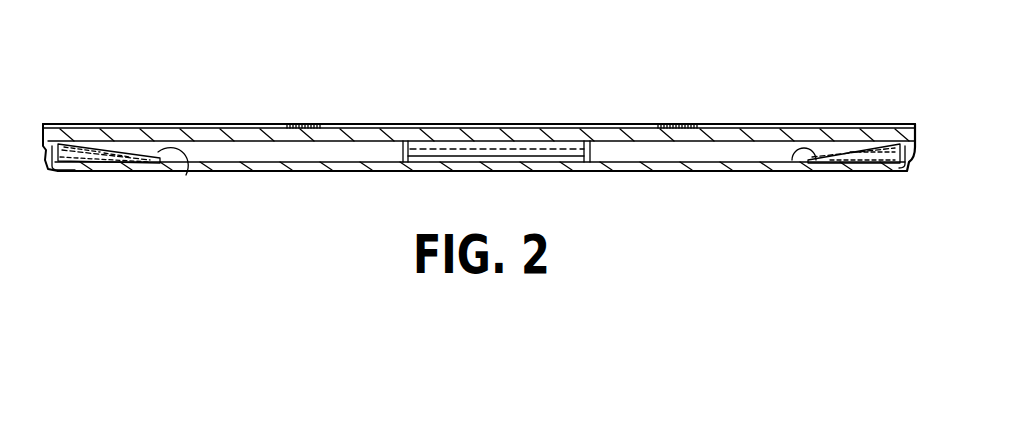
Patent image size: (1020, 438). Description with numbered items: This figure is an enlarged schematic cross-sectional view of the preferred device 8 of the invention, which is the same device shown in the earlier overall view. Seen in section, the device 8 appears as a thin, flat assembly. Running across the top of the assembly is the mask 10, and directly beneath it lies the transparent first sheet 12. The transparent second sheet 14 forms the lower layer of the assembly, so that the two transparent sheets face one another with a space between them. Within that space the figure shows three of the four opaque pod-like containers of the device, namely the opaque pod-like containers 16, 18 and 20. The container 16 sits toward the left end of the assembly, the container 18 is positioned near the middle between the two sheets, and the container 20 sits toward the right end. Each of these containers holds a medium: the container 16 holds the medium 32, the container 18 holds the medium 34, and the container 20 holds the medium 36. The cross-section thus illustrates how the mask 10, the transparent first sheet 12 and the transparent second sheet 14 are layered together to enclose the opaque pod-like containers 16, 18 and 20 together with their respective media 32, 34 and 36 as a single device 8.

The device 8 is at (642, 53).
The mask 10 is at (820, 127).
The transparent first sheet 12 is at (720, 127).
The transparent second sheet 14 is at (677, 171).
The opaque pod-like container 16 is at (186, 175).
The opaque pod-like container 18 is at (403, 150).
The opaque pod-like container 20 is at (797, 160).
The medium 32 is at (103, 171).
The medium 34 is at (477, 150).
The medium 36 is at (867, 163).